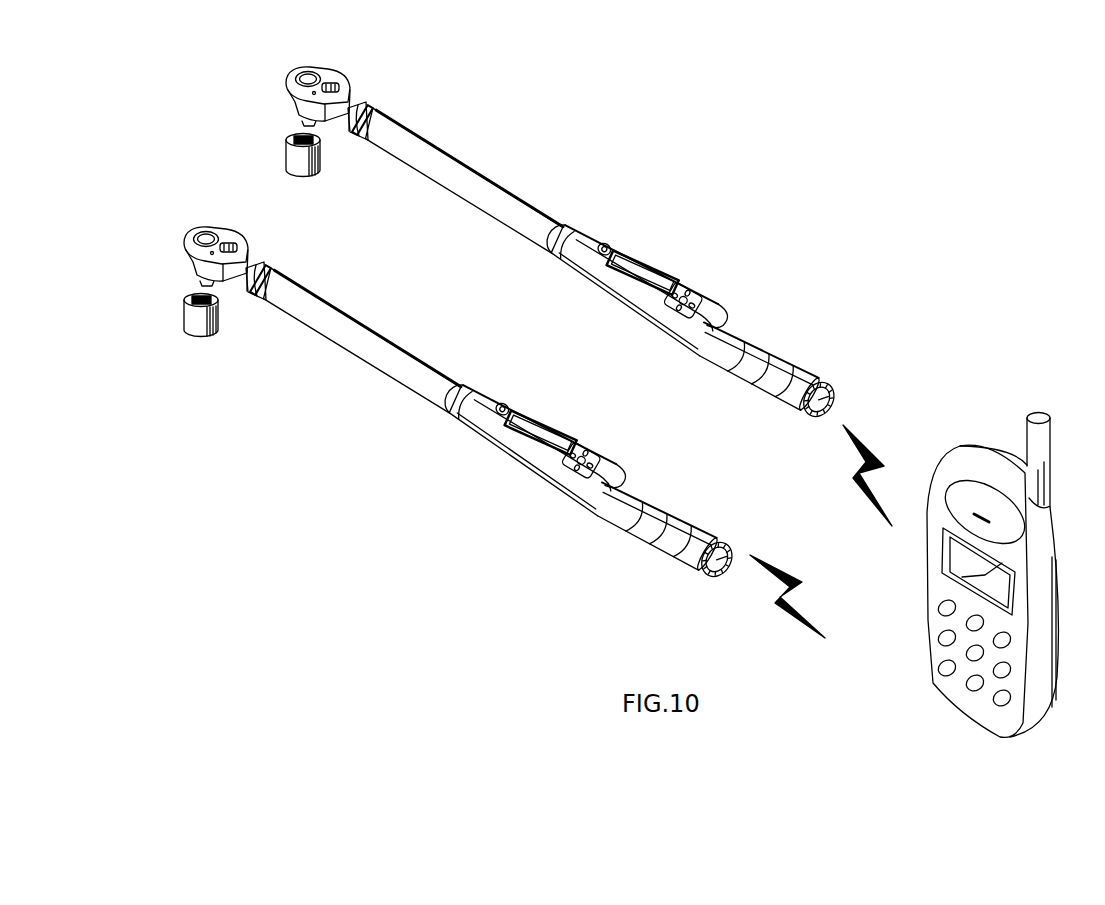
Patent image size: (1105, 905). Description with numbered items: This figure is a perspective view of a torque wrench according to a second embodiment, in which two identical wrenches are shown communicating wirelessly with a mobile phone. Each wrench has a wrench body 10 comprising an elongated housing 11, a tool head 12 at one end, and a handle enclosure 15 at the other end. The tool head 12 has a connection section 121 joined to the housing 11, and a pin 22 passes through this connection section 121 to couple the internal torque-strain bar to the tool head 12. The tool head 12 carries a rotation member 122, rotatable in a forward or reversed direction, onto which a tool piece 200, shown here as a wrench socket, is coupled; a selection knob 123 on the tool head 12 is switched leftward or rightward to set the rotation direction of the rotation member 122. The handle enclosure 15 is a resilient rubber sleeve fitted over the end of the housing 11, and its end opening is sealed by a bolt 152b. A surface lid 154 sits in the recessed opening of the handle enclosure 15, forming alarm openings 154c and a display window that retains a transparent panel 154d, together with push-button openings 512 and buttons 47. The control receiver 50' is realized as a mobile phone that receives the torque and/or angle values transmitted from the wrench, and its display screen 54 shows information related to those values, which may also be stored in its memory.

The wrench body 10 is at (408, 440).
The housing 11 is at (352, 322).
The tool head 12 is at (218, 231).
The connection section 121 is at (252, 288).
The rotation member 122 is at (193, 272).
The selection knob 123 is at (238, 247).
The pin 22 is at (270, 270).
The handle enclosure 15 is at (660, 506).
The bolt 152b is at (711, 575).
The surface lid 154 is at (521, 452).
The alarm openings 154c is at (503, 407).
The transparent panel 154d is at (541, 429).
The control buttons 47 is at (580, 452).
The push-button openings 512 is at (568, 462).
The tool piece 200 is at (195, 318).
The control receiver 50' is at (954, 562).
The display screen 54 is at (960, 562).